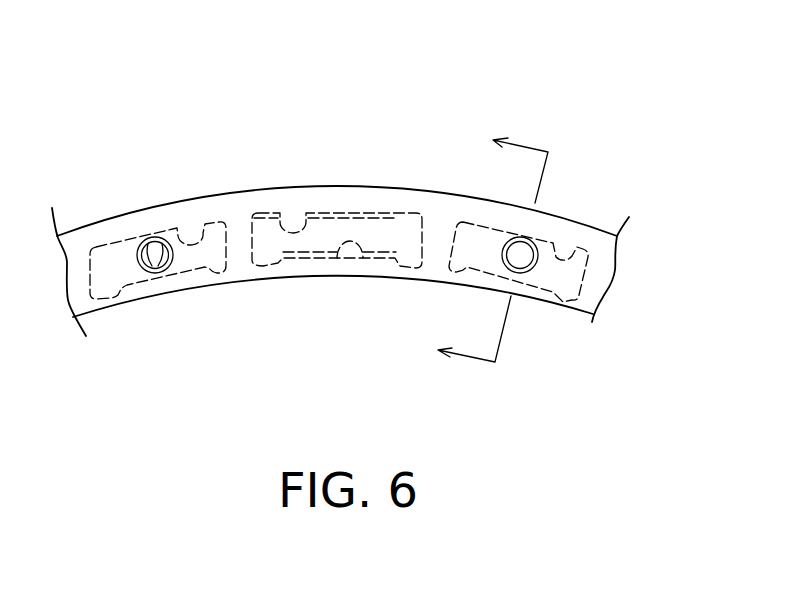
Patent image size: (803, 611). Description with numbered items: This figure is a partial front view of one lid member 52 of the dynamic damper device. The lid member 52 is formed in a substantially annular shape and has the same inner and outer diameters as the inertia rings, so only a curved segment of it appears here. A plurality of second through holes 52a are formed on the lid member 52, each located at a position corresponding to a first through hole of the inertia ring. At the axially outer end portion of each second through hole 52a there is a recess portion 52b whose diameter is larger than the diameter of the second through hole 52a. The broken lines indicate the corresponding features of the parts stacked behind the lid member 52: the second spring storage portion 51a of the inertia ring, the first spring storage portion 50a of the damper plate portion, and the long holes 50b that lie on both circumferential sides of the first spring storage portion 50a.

The lid member 52 is at (458, 129).
The second through hole 52a is at (147, 272).
The recess portion 52b is at (170, 253).
The second spring storage portion 51a is at (309, 222).
The first spring storage portion 50a is at (357, 245).
The long hole 50b is at (206, 222).